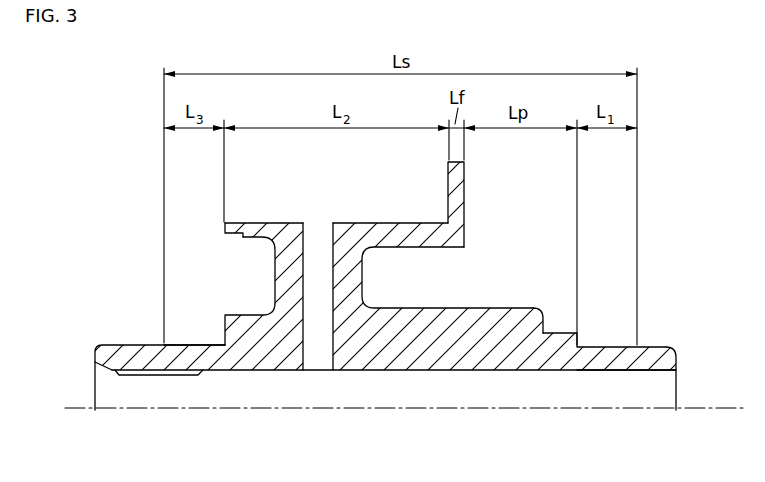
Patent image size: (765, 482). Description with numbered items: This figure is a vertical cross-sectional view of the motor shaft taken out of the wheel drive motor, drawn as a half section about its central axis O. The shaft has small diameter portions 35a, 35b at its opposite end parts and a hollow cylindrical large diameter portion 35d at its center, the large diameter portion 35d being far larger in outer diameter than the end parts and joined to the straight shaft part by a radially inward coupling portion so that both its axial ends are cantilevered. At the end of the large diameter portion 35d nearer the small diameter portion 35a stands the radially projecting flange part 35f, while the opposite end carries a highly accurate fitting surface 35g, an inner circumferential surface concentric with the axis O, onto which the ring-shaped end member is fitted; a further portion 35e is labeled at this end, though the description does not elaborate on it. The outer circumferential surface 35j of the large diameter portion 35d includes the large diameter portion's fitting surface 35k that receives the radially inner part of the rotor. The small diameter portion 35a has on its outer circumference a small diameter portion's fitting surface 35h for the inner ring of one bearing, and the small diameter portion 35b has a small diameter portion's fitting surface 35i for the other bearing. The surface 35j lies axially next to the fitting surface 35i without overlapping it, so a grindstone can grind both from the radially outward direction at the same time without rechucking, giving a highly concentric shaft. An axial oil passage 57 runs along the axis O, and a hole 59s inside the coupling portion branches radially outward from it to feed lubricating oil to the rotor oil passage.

The small diameter portion 35a is at (660, 365).
The small diameter portion 35b is at (148, 350).
The large diameter portion 35d is at (428, 252).
The lip portion 35e is at (226, 228).
The flange part 35f is at (458, 190).
The fitting surface 35g is at (233, 240).
The small diameter portion's fitting surface 35h is at (607, 346).
The small diameter portion's fitting surface 35i is at (197, 344).
The outer circumferential surface 35j is at (397, 217).
The large diameter portion's fitting surface 35k is at (264, 221).
The axial oil passage 57 is at (660, 392).
The hole 59s is at (313, 352).
The axis O is at (394, 409).